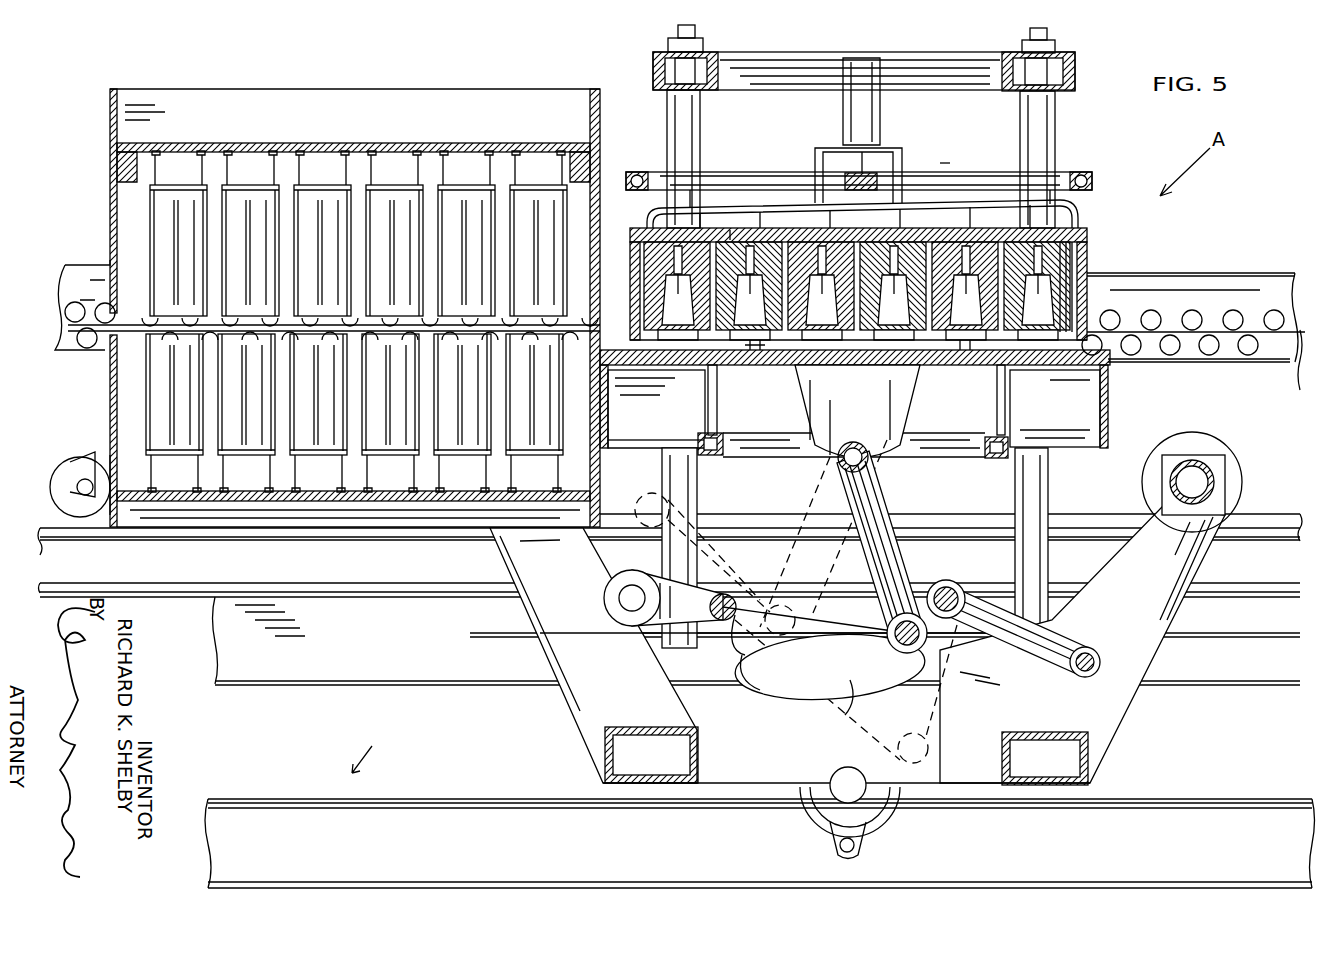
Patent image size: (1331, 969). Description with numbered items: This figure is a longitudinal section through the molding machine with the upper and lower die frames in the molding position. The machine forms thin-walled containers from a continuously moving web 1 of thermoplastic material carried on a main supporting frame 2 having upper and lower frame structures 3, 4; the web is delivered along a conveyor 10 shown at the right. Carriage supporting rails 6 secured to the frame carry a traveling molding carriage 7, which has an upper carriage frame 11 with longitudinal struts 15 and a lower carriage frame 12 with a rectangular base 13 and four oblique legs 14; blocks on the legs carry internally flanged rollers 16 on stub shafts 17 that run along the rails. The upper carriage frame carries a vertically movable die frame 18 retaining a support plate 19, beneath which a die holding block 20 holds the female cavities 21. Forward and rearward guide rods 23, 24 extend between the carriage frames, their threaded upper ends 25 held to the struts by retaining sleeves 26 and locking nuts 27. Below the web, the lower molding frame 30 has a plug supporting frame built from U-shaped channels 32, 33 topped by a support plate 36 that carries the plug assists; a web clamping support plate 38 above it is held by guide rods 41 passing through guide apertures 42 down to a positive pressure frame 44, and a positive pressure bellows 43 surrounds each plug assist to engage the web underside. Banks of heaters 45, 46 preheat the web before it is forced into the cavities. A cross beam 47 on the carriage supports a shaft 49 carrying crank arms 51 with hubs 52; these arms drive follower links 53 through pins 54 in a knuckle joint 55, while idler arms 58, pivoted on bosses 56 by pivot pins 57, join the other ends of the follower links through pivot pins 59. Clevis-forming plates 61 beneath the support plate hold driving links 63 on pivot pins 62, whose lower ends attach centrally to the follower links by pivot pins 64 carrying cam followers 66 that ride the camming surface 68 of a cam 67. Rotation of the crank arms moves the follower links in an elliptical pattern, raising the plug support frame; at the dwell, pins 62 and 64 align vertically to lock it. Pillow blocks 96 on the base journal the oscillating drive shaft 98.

The web 1 is at (1291, 360).
The main supporting frame 2 is at (368, 756).
The upper frame structure 3 is at (285, 678).
The lower frame structure 4 is at (235, 800).
The carriage supporting rails 6 is at (1268, 512).
The molding carriage 7 is at (846, 654).
The roller conveyor 10 is at (1193, 300).
The upper carriage frame 11 is at (894, 241).
The lower carriage frame 12 is at (1116, 397).
The base 13 is at (1085, 786).
The legs 14 is at (522, 555).
The struts 15 is at (1075, 76).
The internally flanged rollers 16 is at (1205, 445).
The stub shafts 17 is at (1208, 478).
The die frame 18 is at (978, 205).
The support plate 19 is at (730, 230).
The die holding block 20 is at (1087, 278).
The cavities 21 is at (1057, 262).
The forward guide rods 23 is at (667, 147).
The rearward guide rods 24 is at (1055, 162).
The threaded upper ends 25 is at (695, 33).
The retaining sleeves 26 is at (712, 65).
The locking nuts 27 is at (665, 45).
The lower molding frame 30 is at (882, 415).
The U-shaped channel 32 is at (608, 427).
The U-shaped channel 33 is at (1100, 405).
The support plate 36 is at (970, 360).
The web clamping support plate 38 is at (1090, 330).
The guide rods 41 is at (716, 413).
The guide apertures 42 is at (722, 370).
The positive pressure bellows 43 is at (760, 345).
The positive pressure frame 44 is at (945, 455).
The heater bank 45 is at (119, 240).
The heater bank 46 is at (102, 404).
The cross beam 47 is at (605, 755).
The shaft 49 is at (630, 600).
The crank arms 51 is at (640, 560).
The hubs 52 is at (608, 584).
The follower links 53 is at (982, 663).
The pins 54 is at (715, 620).
The knuckle joint 55 is at (738, 655).
The bosses 56 is at (952, 582).
The pivot pins 57 is at (940, 590).
The idler arms 58 is at (1052, 633).
The pivot pins 59 is at (1092, 652).
The clevis-forming plates 61 is at (798, 405).
The pivot pins 62 is at (838, 458).
The driving links 63 is at (890, 490).
The pivot pins 64 is at (800, 695).
The cam followers 66 is at (935, 660).
The cam 67 is at (848, 700).
The camming surface 68 is at (752, 700).
The pillow blocks 96 is at (823, 808).
The drive shaft 98 is at (850, 775).